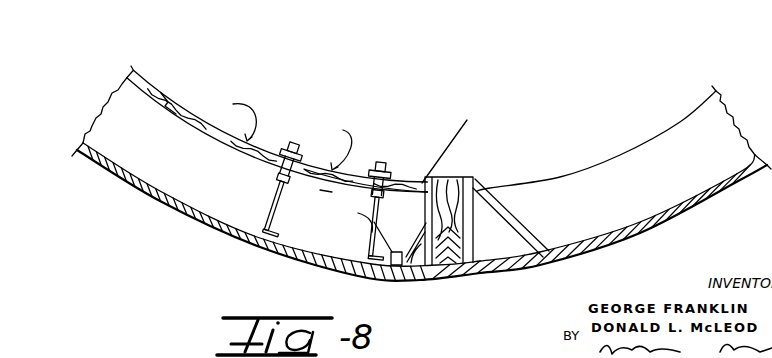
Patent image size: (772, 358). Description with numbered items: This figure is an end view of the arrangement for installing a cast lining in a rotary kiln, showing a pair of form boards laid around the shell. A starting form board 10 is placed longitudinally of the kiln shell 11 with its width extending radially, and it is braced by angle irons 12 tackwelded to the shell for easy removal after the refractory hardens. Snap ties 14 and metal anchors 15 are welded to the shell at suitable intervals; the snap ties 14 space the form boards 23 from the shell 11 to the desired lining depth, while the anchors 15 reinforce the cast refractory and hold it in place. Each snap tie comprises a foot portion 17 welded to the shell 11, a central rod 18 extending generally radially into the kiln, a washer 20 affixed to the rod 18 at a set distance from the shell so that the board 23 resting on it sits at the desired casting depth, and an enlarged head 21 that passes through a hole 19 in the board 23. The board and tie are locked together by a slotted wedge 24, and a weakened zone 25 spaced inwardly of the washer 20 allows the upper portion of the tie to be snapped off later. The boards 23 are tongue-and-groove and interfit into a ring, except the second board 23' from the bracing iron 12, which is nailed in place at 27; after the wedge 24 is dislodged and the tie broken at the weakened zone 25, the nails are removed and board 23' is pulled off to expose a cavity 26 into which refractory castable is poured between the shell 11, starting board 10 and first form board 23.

The starting form board 10 is at (450, 178).
The kiln shell 11 is at (145, 194).
The angle irons 12 is at (508, 206).
The snap ties 14 is at (391, 224).
The metal anchors 15 is at (410, 266).
The foot portion 17 is at (353, 265).
The central rod 18 is at (366, 232).
The aperture or hole 19 is at (388, 174).
The washer 20 is at (320, 190).
The enlarged head 21 is at (378, 164).
The form boards 23 is at (277, 110).
The second form board 23' is at (365, 136).
The slotted wedge 24 is at (286, 145).
The weakened zone 25 is at (287, 183).
The cavity 26 is at (353, 243).
The nails 27 is at (354, 138).